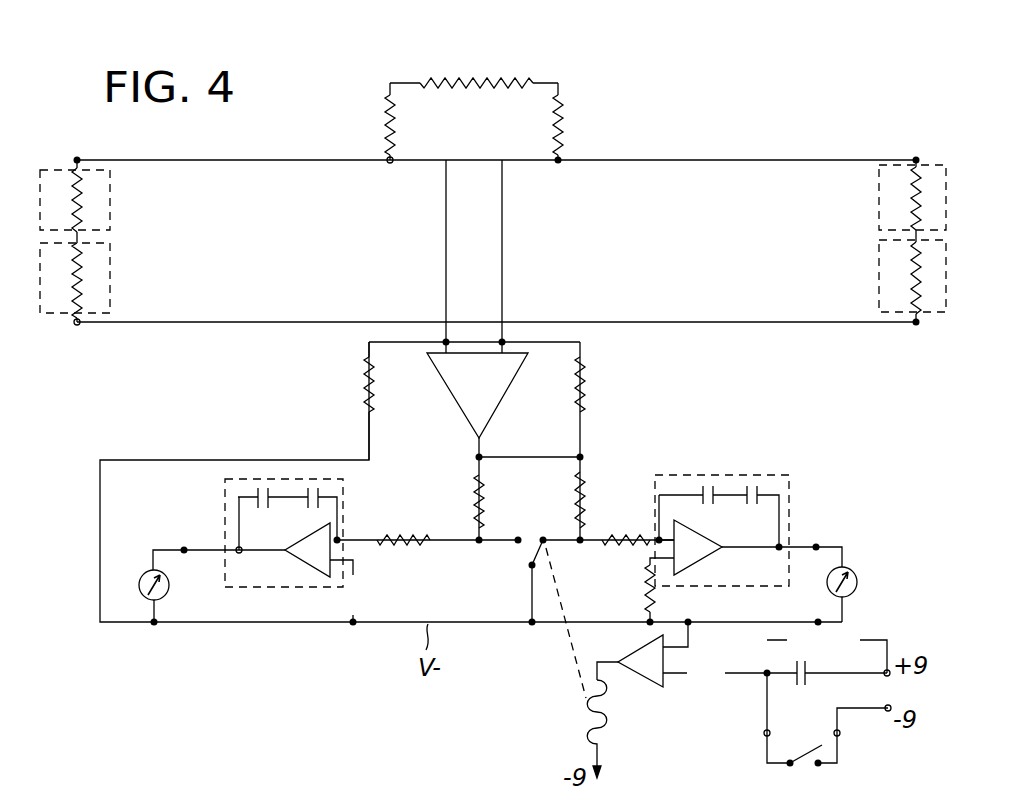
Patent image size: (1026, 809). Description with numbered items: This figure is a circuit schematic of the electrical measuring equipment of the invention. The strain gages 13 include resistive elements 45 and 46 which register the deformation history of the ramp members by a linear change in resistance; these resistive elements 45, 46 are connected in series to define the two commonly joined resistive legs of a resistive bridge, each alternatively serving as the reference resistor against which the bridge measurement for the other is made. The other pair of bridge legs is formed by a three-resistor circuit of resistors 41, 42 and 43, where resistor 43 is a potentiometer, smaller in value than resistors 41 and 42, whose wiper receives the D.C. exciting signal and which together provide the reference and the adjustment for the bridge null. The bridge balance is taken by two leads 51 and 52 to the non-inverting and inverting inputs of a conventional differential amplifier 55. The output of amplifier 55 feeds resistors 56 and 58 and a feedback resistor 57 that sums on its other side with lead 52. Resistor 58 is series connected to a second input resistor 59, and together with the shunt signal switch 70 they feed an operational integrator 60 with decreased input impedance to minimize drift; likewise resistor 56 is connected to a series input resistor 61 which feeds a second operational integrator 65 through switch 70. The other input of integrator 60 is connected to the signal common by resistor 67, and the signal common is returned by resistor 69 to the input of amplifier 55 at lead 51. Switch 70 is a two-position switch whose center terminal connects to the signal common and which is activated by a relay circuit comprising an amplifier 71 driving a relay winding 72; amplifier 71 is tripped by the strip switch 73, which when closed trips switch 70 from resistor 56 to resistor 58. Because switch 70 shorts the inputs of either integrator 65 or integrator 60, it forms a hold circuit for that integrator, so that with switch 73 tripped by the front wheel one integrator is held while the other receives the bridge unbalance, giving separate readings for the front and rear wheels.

The strain gage 13 is at (112, 208).
The resistor 41 is at (392, 128).
The resistor 42 is at (560, 112).
The potentiometer 43 is at (490, 82).
The resistive element 45 is at (82, 192).
The resistive element 46 is at (918, 182).
The lead 51 is at (445, 238).
The lead 52 is at (503, 242).
The differential amplifier 55 is at (498, 390).
The resistor 56 is at (483, 500).
The feedback resistor 57 is at (584, 382).
The resistor 58 is at (584, 486).
The input resistor 59 is at (618, 537).
The operational integrator 60 is at (766, 474).
The input resistor 61 is at (398, 536).
The operational integrator 65 is at (344, 498).
The resistor 67 is at (648, 582).
The resistor 69 is at (368, 383).
The switch 70 is at (545, 538).
The amplifier 71 is at (657, 672).
The relay winding 72 is at (605, 712).
The strip switch 73 is at (808, 748).